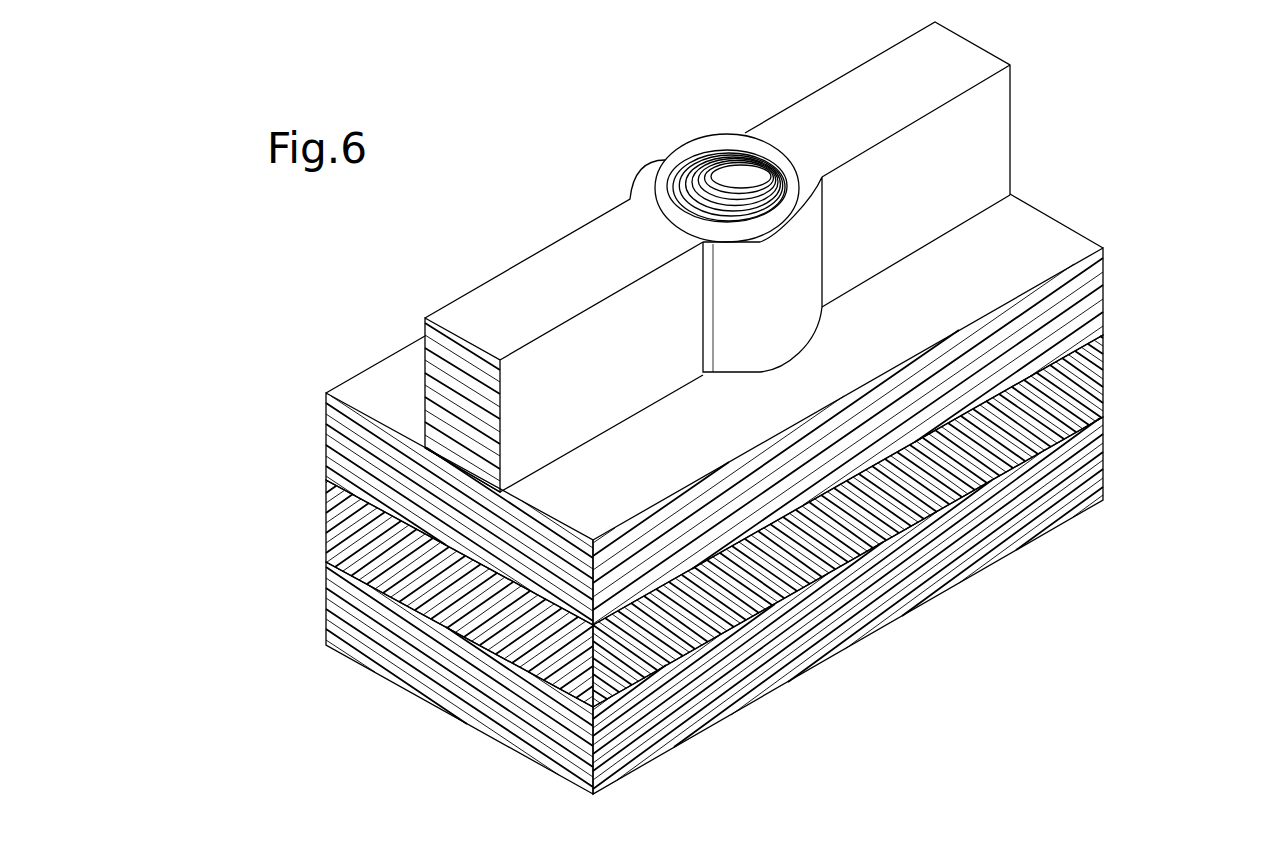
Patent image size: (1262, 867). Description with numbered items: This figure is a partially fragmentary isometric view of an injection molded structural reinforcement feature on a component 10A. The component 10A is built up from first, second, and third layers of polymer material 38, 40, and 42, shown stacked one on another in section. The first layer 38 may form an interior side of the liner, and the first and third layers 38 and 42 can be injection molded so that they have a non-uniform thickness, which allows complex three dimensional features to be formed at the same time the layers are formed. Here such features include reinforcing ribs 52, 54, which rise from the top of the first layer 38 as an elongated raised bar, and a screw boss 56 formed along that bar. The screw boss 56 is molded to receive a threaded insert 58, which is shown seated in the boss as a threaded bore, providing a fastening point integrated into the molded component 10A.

The component 10A is at (360, 368).
The first layer of polymer material 38 is at (1103, 285).
The second layer of polymer material 40 is at (1103, 380).
The third layer of polymer material 42 is at (1105, 460).
The reinforcing rib 52 is at (518, 283).
The reinforcing rib 54 is at (717, 257).
The screw boss 56 is at (643, 160).
The threaded insert 58 is at (727, 152).